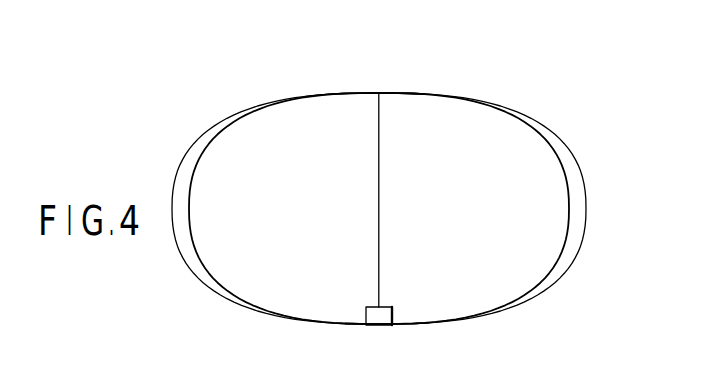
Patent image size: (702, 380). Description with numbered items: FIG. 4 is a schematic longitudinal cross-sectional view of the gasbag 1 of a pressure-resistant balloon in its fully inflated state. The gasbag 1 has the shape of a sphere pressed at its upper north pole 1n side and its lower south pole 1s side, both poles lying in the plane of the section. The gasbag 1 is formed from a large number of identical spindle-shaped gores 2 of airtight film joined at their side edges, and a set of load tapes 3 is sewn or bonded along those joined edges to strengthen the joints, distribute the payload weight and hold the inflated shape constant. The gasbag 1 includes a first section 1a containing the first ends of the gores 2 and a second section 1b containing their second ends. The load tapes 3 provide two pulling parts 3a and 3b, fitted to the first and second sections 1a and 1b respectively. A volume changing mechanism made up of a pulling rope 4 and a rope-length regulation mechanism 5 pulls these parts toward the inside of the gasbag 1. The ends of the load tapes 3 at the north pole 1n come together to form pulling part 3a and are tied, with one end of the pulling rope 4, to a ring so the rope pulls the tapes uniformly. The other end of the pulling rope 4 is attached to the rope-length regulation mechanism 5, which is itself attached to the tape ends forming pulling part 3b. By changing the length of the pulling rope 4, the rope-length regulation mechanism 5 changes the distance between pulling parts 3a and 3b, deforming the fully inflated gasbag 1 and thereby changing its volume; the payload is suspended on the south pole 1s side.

The gasbag 1 is at (504, 87).
The first section 1a is at (356, 93).
The north pole 1n is at (380, 92).
The south pole 1s is at (380, 327).
The second section 1b is at (400, 326).
The gore 2 is at (568, 147).
The load tape 3 is at (557, 158).
The pulling part 3a is at (381, 96).
The pulling part 3b is at (370, 320).
The pulling rope 4 is at (380, 203).
The rope-length regulation mechanism 5 is at (393, 308).